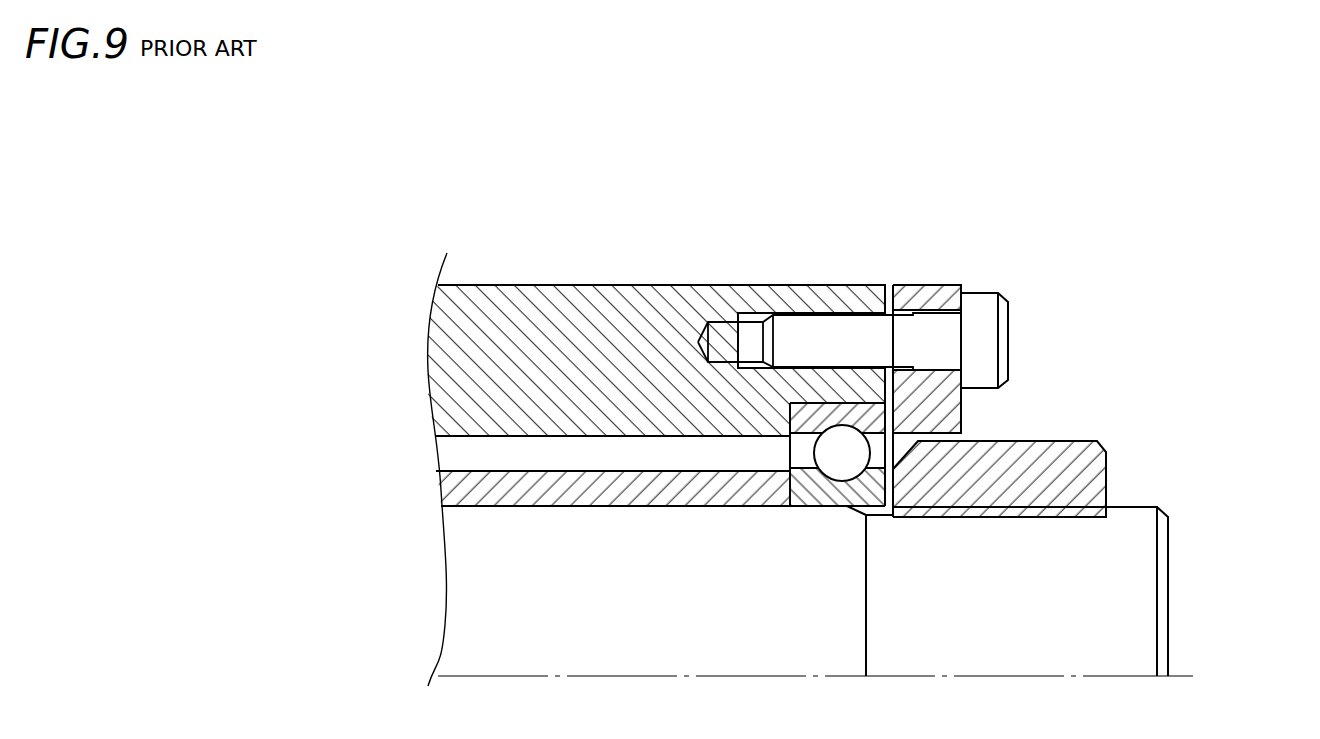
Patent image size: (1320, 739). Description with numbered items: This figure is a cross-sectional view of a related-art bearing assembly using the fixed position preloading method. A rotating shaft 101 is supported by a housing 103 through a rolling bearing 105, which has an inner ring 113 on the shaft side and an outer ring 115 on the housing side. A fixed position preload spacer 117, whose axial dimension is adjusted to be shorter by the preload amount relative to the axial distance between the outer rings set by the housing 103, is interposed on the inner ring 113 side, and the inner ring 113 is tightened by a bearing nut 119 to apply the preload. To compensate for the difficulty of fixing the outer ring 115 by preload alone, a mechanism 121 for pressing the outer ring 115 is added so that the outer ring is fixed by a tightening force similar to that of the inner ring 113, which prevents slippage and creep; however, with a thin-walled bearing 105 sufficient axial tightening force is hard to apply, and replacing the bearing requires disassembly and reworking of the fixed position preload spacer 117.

The rotating shaft 101 is at (1170, 587).
The housing 103 is at (862, 284).
The rolling bearing 105 is at (835, 400).
The inner ring 113 is at (790, 486).
The outer ring 115 is at (790, 420).
The fixed position preload spacer 117 is at (440, 491).
The bearing nut 119 is at (1108, 473).
The mechanism for pressing the outer ring 121 is at (943, 278).